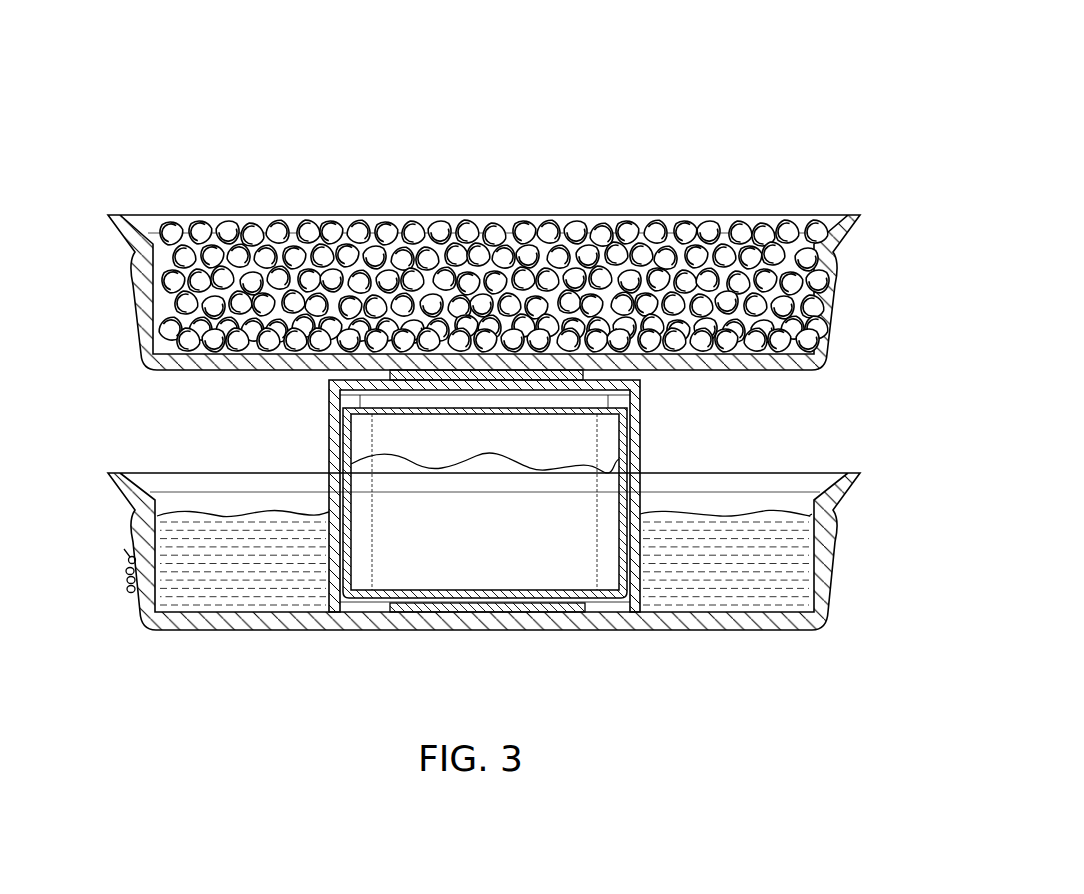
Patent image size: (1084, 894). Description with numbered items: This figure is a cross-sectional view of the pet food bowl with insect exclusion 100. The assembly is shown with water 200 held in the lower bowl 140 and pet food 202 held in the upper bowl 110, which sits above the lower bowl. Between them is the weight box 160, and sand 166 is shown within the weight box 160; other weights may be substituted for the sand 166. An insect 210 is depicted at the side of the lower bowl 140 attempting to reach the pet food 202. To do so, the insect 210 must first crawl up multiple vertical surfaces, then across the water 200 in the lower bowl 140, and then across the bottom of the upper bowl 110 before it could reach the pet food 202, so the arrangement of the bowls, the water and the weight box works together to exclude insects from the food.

The pet food bowl with insect exclusion 100 is at (634, 46).
The upper bowl 110 is at (854, 257).
The lower bowl 140 is at (854, 525).
The weight box 160 is at (651, 427).
The sand 166 is at (503, 532).
The water 200 is at (256, 574).
The pet food 202 is at (264, 298).
The insect 210 is at (123, 566).